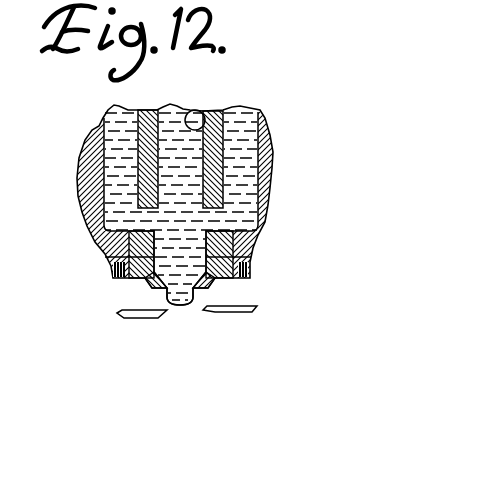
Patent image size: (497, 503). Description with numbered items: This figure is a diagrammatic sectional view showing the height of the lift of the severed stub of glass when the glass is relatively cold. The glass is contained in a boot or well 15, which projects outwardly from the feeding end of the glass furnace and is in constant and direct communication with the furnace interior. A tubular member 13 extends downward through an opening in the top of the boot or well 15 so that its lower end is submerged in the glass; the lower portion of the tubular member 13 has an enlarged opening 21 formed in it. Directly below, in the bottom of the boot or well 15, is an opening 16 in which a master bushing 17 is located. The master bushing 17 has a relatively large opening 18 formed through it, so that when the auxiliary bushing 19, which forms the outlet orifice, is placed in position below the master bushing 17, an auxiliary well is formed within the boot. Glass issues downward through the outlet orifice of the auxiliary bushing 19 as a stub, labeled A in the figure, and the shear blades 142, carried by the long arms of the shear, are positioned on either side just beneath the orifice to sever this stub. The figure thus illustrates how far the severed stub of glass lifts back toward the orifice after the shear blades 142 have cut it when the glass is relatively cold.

The tubular member 13 is at (211, 112).
The boot or well 15 is at (273, 155).
The opening 16 is at (108, 255).
The master bushing 17 is at (115, 278).
The opening 18 is at (189, 262).
The auxiliary bushing 19 is at (150, 288).
The enlarged opening 21 is at (189, 112).
The shear blades 142 is at (143, 318).
The nozzle A is at (181, 307).